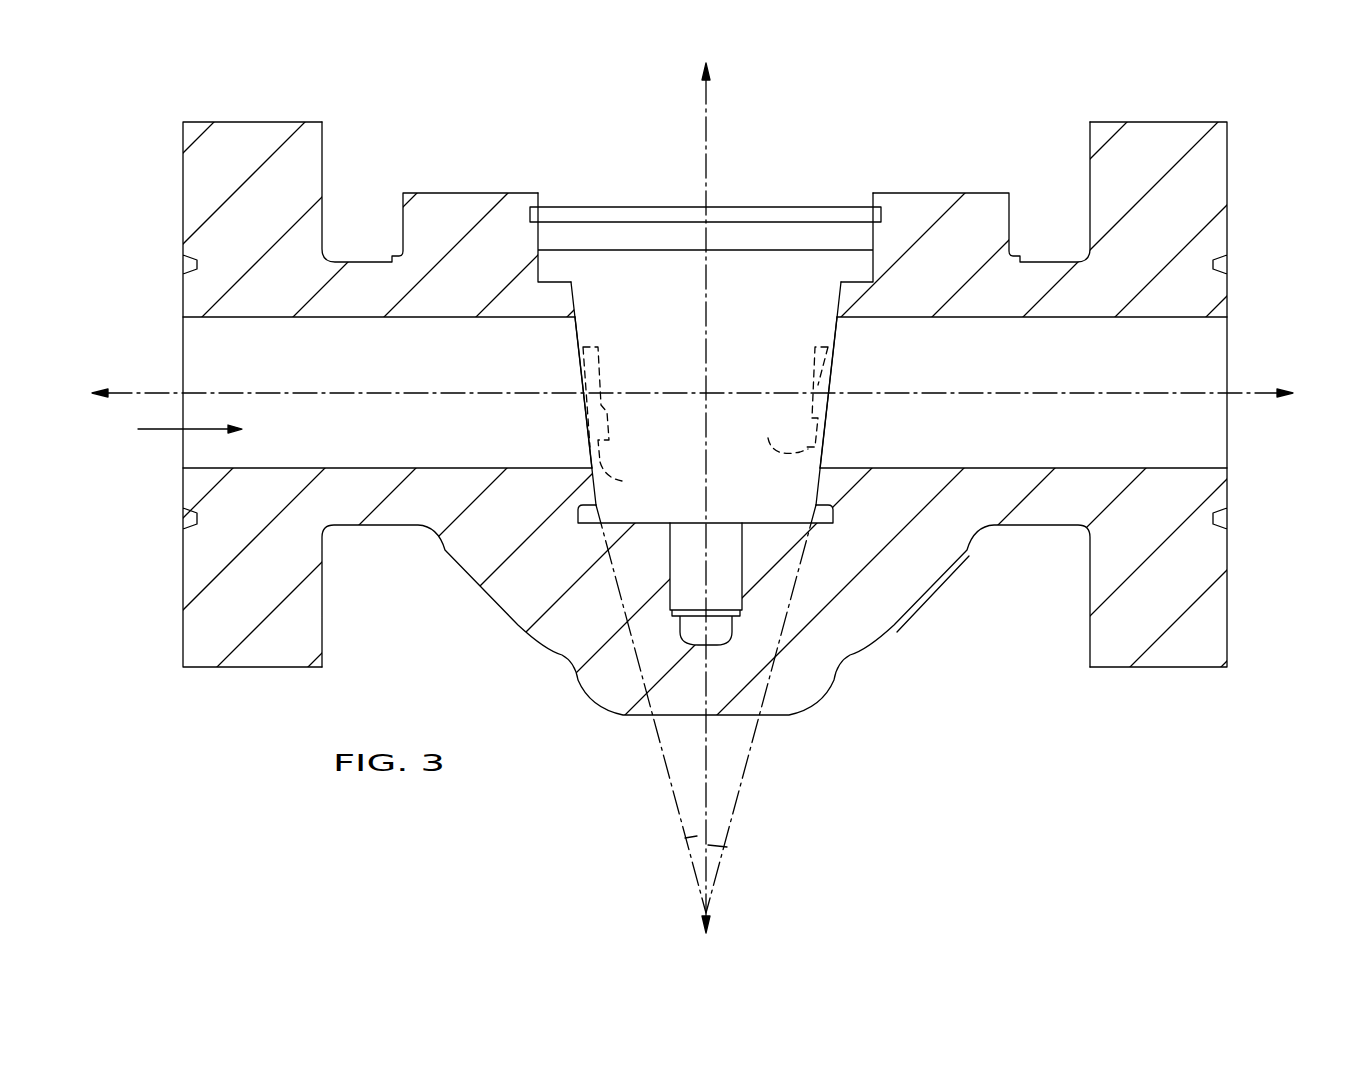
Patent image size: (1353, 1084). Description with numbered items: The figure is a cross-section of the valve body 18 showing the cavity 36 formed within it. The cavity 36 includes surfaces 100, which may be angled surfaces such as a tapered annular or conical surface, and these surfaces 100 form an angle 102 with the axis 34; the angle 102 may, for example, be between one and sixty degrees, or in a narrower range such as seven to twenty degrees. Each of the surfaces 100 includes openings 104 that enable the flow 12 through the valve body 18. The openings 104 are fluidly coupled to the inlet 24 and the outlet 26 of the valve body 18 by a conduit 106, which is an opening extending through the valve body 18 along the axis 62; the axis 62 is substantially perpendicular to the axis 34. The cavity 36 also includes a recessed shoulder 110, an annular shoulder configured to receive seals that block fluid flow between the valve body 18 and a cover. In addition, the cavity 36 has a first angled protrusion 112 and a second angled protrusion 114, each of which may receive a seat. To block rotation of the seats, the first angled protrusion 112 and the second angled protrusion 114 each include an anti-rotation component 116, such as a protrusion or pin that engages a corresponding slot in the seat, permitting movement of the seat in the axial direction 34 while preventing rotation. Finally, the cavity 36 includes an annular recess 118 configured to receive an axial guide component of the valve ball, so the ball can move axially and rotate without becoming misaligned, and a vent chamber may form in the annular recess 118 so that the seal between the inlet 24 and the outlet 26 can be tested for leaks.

The flow 12 is at (160, 431).
The valve body 18 is at (936, 112).
The inlet 24 is at (253, 122).
The outlet 26 is at (1158, 122).
The axis 34 is at (708, 151).
The cavity 36 is at (643, 371).
The axis 62 is at (1252, 400).
The surfaces 100 is at (579, 336).
The angle 102 is at (695, 835).
The openings 104 is at (572, 404).
The conduit 106 is at (342, 440).
The recessed shoulder 110 is at (540, 214).
The first angled protrusion 112 is at (612, 477).
The second angled protrusion 114 is at (774, 430).
The anti-rotation component 116 is at (607, 417).
The annular recess 118 is at (824, 513).